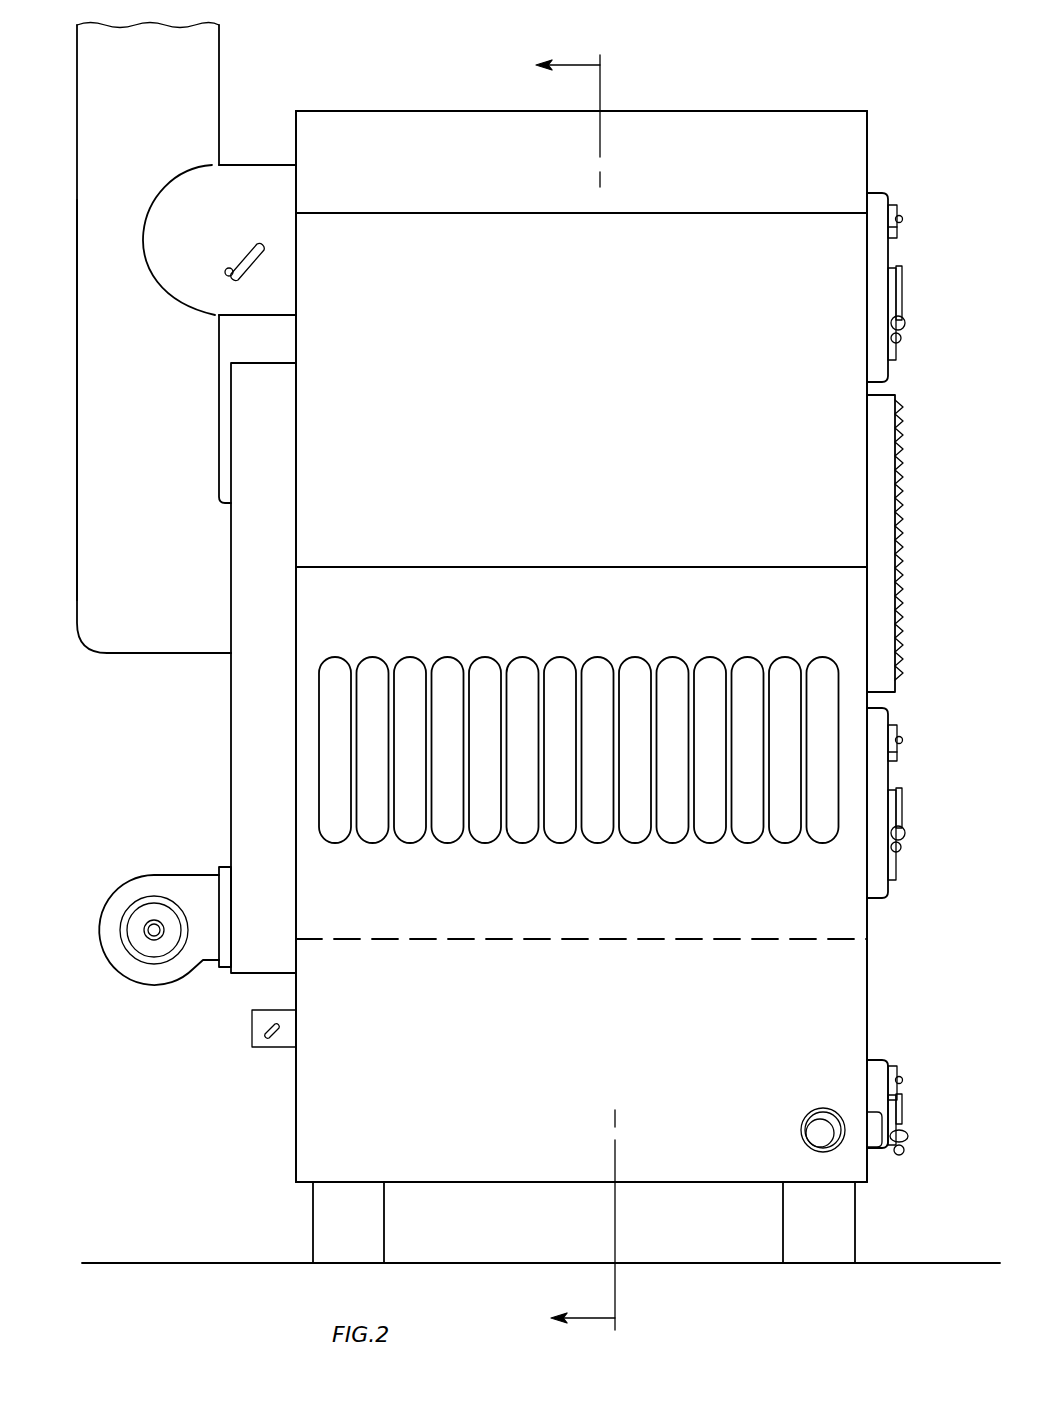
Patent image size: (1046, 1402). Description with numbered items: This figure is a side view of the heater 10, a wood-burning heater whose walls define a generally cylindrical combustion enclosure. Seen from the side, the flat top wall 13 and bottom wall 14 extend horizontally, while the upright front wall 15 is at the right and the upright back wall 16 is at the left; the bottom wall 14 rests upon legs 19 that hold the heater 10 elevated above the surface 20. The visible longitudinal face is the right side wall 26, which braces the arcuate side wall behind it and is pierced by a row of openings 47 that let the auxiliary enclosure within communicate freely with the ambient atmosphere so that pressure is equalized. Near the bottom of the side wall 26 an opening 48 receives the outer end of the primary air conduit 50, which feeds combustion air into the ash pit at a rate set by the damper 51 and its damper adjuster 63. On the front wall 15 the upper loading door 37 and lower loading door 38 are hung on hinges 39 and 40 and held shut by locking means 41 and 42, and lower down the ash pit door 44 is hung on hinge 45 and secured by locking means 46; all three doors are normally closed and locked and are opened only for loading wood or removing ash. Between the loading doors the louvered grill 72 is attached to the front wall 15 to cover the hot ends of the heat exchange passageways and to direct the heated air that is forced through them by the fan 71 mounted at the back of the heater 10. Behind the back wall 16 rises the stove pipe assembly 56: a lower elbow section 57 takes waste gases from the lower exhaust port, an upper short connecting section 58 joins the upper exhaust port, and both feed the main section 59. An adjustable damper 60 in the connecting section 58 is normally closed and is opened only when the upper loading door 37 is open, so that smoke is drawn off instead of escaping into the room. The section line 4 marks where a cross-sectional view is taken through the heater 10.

The heater 10 is at (705, 102).
The top wall 13 is at (390, 111).
The bottom wall 14 is at (512, 1183).
The front wall 15 is at (867, 123).
The back wall 16 is at (296, 124).
The legs 19 is at (352, 1236).
The surface 20 is at (566, 1263).
The right side wall 26 is at (553, 1044).
The upper loading door 37 is at (884, 193).
The lower loading door 38 is at (888, 708).
The hinge 39 is at (897, 227).
The hinge 40 is at (897, 752).
The locking means 41 is at (902, 305).
The locking means 42 is at (902, 828).
The ash pit door 44 is at (878, 1060).
The hinge 45 is at (897, 1070).
The locking means 46 is at (902, 1105).
The openings 47 is at (560, 843).
The opening 48 is at (803, 1124).
The primary air conduit 50 is at (848, 1112).
The damper 51 is at (810, 1134).
The stove pipe assembly 56 is at (70, 377).
The lower elbow section 57 is at (140, 655).
The upper short connecting section 58 is at (253, 214).
The main section 59 is at (137, 58).
The adjustable damper 60 is at (228, 274).
The damper adjuster 63 is at (880, 1148).
The fan 71 is at (104, 912).
The louvered grill 72 is at (900, 520).
The section line 4- 4 is at (590, 694).